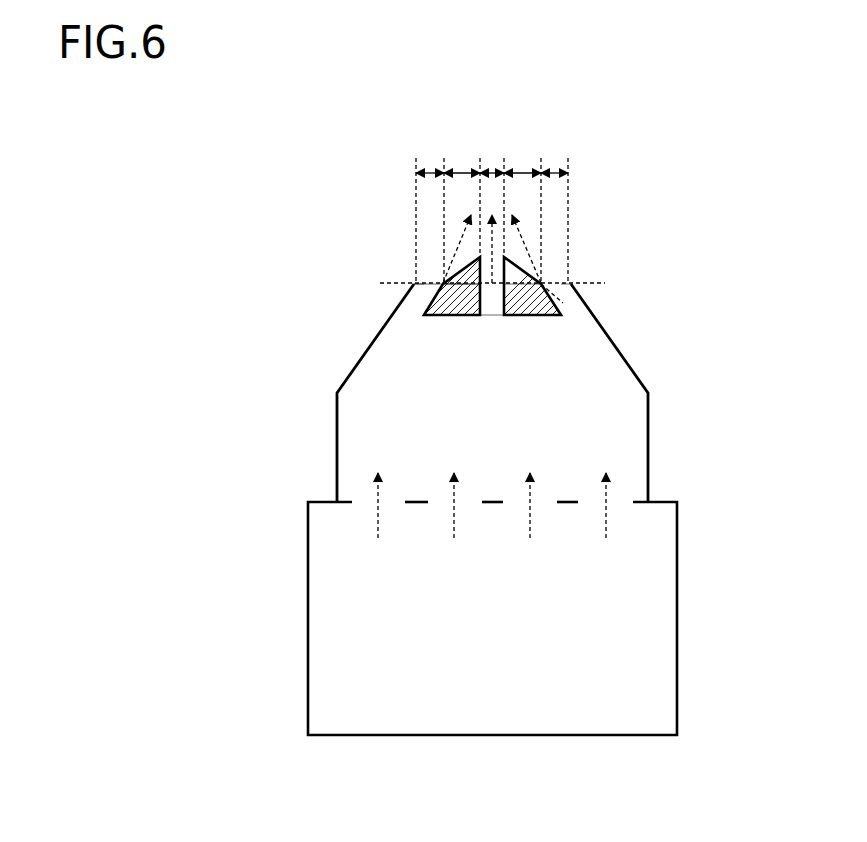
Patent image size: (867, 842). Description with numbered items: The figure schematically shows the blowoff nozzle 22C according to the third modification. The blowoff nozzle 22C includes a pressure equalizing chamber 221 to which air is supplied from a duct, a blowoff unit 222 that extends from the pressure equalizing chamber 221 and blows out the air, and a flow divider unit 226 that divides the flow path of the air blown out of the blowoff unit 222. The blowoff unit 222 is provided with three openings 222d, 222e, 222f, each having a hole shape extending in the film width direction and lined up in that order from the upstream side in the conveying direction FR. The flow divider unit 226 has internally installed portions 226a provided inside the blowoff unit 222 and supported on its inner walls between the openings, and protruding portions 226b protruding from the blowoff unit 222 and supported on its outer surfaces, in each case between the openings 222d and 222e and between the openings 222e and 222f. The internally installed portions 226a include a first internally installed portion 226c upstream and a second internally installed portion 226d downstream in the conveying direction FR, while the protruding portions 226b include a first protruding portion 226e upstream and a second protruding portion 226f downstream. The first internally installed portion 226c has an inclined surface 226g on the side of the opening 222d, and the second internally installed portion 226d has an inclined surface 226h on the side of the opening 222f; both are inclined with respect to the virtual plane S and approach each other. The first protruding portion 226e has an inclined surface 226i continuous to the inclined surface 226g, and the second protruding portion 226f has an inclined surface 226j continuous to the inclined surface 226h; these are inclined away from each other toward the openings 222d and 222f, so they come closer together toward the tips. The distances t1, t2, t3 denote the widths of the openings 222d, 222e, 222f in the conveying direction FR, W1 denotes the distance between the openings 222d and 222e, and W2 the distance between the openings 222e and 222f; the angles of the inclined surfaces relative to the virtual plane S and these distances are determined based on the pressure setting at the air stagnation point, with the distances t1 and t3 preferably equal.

The pressure equalizing chamber 221 is at (655, 618).
The blowoff unit 222 is at (608, 373).
The blowoff nozzle 22C is at (684, 443).
The opening 222d is at (419, 278).
The opening 222e is at (490, 292).
The opening 222f is at (563, 278).
The flow divider unit 226 is at (147, 298).
The internally installed portions 226a is at (225, 355).
The protruding portions 226b is at (225, 277).
The first internally installed portion 226c is at (457, 316).
The second internally installed portion 226d is at (540, 316).
The first protruding portion 226e is at (450, 287).
The second protruding portion 226f is at (502, 291).
The inclined surface 226g is at (418, 283).
The inclined surface 226h is at (556, 311).
The inclined surface 226i is at (462, 270).
The inclined surface 226j is at (522, 268).
The virtual plane S is at (400, 282).
The conveying direction FR is at (512, 98).
The distance between opening 222d and opening 222e W1 is at (453, 170).
The distance between opening 222e and opening 222f W2 is at (514, 170).
The distance of opening 222d t1 is at (430, 157).
The distance of opening 222e t2 is at (492, 157).
The distance of opening 222f t3 is at (554, 157).